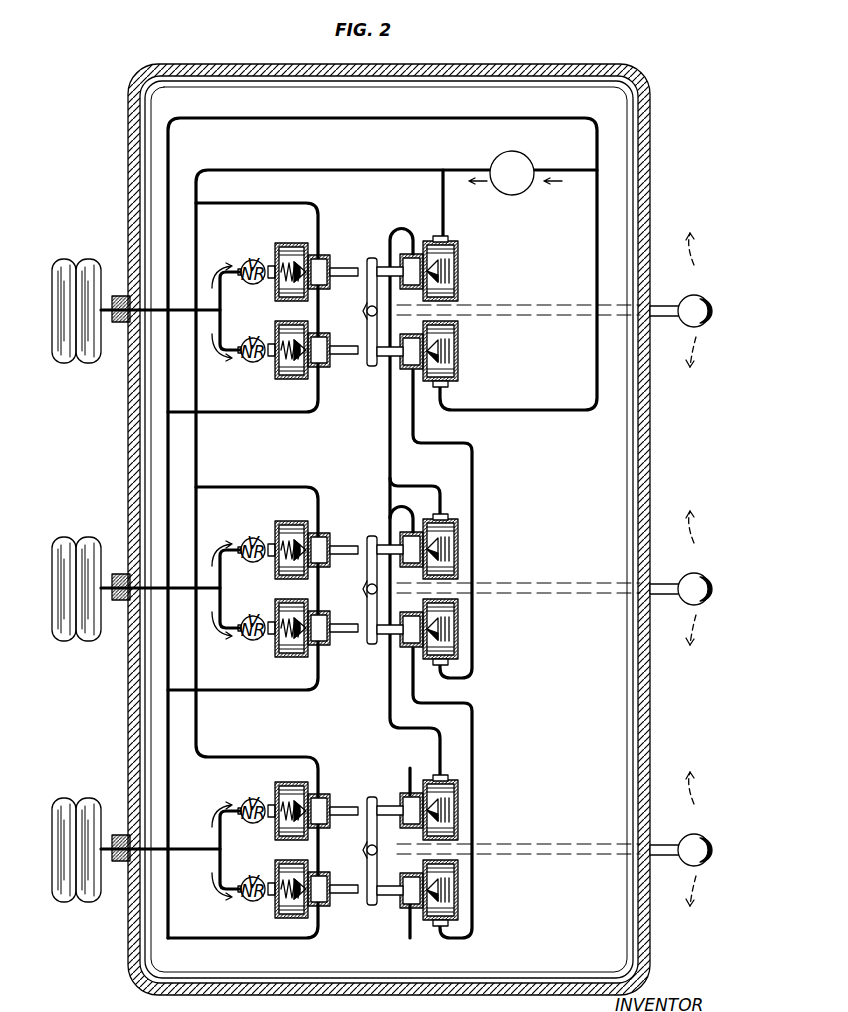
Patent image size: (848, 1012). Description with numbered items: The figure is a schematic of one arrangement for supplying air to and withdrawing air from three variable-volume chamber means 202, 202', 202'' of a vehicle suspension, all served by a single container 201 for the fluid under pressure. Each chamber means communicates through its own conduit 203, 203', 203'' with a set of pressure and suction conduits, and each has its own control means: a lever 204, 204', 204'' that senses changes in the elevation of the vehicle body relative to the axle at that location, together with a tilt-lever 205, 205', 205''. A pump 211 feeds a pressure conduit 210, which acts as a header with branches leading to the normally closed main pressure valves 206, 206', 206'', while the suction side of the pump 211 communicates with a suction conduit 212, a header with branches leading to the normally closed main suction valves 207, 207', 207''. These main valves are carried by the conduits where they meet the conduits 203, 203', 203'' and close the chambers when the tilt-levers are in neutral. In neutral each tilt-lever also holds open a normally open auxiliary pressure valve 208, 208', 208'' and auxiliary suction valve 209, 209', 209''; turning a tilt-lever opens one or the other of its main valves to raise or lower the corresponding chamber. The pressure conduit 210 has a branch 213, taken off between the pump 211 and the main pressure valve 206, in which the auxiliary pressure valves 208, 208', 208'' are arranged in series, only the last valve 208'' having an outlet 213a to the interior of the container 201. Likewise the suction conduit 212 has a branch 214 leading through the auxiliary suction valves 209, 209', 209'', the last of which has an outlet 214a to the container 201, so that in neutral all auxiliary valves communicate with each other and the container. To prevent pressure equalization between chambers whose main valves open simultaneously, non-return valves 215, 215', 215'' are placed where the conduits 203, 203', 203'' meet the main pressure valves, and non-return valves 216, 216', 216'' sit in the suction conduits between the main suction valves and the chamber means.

The container 201 is at (650, 98).
The variable-volume chamber means 202 is at (76, 295).
The variable-volume chamber means 202' is at (76, 573).
The variable-volume chamber means 202'' is at (76, 834).
The conduit 203 is at (153, 344).
The conduit 203' is at (152, 622).
The conduit 203'' is at (151, 882).
The lever 204 is at (681, 300).
The lever 204' is at (681, 578).
The lever 204'' is at (681, 839).
The tilt-lever 205 is at (357, 296).
The tilt-lever 205' is at (356, 574).
The tilt-lever 205'' is at (357, 835).
The main pressure valve 206 is at (311, 257).
The main pressure valve 206' is at (310, 535).
The main pressure valve 206'' is at (305, 799).
The main suction valve 207 is at (304, 364).
The main suction valve 207' is at (298, 642).
The main suction valve 207'' is at (286, 894).
The auxiliary pressure valve 208 is at (432, 253).
The auxiliary pressure valve 208' is at (448, 536).
The auxiliary pressure valve 208'' is at (452, 801).
The auxiliary suction valve 209 is at (439, 354).
The auxiliary suction valve 209' is at (452, 638).
The auxiliary suction valve 209'' is at (456, 893).
The pressure conduit 210 is at (371, 170).
The pump 211 is at (518, 192).
The suction conduit 212 is at (432, 122).
The branch 213 is at (388, 424).
The outlet 213a is at (408, 760).
The branch 214 is at (474, 553).
The outlet 214a is at (408, 925).
The non-return valve 215 is at (238, 288).
The non-return valve 215' is at (236, 568).
The non-return valve 215'' is at (234, 829).
The non-return valve 216 is at (238, 362).
The non-return valve 216' is at (237, 640).
The non-return valve 216'' is at (241, 873).